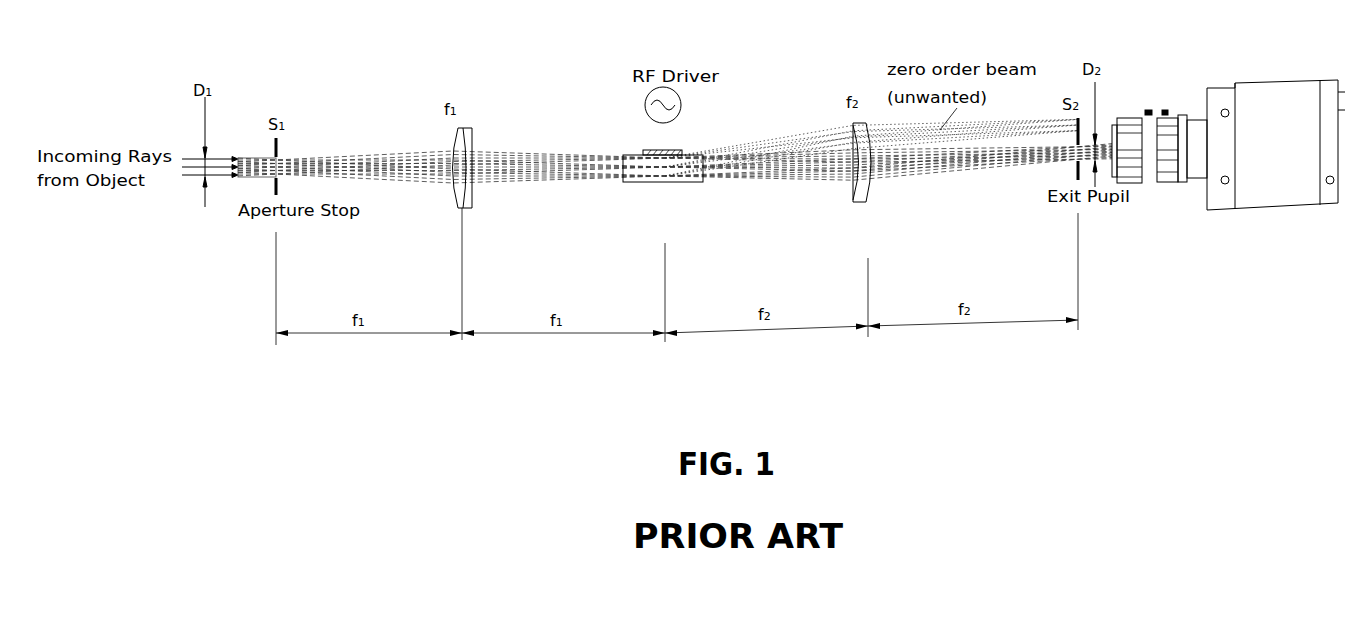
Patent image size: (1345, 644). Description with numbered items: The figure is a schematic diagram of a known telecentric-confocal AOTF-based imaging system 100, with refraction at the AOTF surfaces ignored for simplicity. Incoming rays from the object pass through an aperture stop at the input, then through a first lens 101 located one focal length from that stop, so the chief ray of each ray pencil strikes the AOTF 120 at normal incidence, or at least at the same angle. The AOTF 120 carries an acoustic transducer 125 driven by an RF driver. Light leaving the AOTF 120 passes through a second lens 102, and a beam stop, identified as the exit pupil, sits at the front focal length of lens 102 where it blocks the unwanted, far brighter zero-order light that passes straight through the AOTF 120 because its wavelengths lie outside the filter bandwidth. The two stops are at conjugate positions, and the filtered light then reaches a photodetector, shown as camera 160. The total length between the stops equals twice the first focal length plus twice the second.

The telecentric-confocal AOTF-based imaging system 100 is at (281, 364).
The lens 101 is at (461, 192).
The lens 102 is at (864, 188).
The AOTF 120 is at (632, 163).
The acoustic transducer 125 is at (647, 150).
The camera 160 is at (1228, 175).